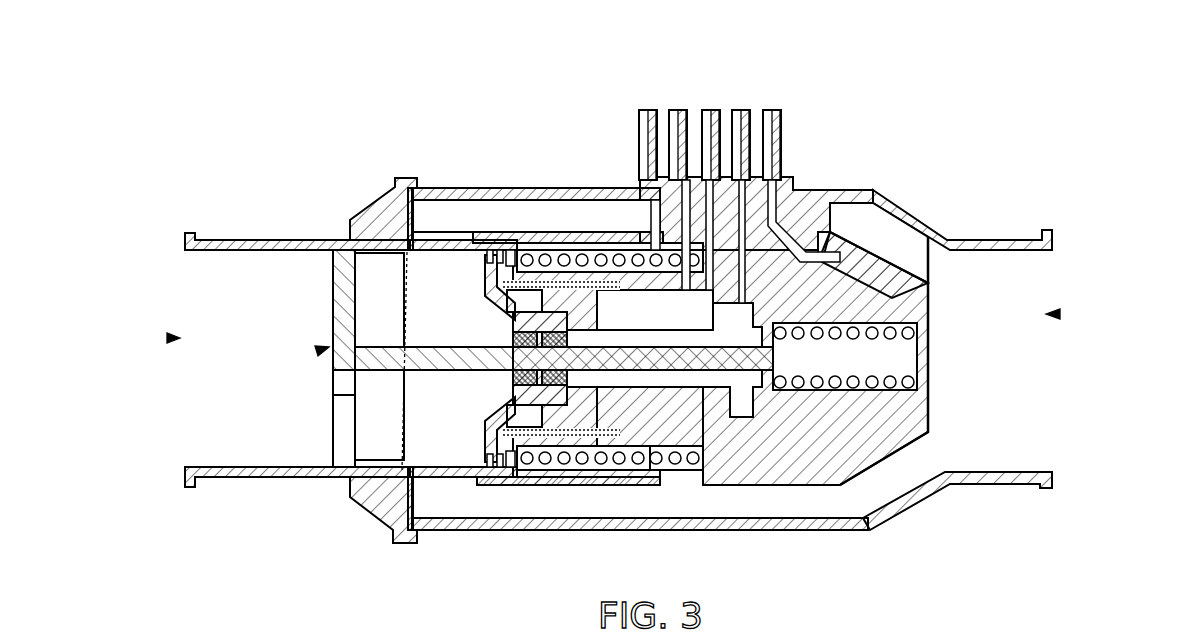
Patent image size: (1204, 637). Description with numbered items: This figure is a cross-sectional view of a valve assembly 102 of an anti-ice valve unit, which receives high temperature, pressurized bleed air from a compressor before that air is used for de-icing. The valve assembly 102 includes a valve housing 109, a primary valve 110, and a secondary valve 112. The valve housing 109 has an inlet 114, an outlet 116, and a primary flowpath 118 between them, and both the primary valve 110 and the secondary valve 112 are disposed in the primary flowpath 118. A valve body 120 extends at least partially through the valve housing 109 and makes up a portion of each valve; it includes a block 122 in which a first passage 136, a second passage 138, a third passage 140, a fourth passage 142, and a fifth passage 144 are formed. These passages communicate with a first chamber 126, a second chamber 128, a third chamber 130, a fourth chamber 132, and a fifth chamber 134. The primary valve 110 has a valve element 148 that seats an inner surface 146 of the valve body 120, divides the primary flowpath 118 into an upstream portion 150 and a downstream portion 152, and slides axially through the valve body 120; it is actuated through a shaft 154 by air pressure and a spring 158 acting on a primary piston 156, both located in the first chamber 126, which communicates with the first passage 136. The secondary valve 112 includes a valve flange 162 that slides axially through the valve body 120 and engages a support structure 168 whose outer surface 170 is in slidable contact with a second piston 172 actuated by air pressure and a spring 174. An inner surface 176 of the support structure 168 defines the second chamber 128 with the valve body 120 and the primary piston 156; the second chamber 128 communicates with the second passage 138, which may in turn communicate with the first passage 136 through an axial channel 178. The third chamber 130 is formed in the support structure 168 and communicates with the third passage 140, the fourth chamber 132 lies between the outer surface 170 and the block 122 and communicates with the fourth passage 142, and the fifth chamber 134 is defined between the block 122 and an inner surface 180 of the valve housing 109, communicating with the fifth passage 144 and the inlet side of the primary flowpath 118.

The valve assembly 102 is at (615, 308).
The valve housing 109 is at (365, 203).
The primary valve 110 is at (320, 351).
The secondary valve 112 is at (448, 244).
The inlet 114 is at (1062, 314).
The outlet 116 is at (170, 338).
The primary flowpath 118 is at (893, 483).
The valve body 120 is at (480, 189).
The block 122 is at (811, 205).
The first chamber 126 is at (838, 395).
The second chamber 128 is at (741, 321).
The third chamber 130 is at (647, 321).
The fourth chamber 132 is at (619, 243).
The fifth chamber 134 is at (561, 206).
The first passage 136 is at (774, 137).
The second passage 138 is at (741, 118).
The third passage 140 is at (717, 117).
The fourth passage 142 is at (677, 127).
The fifth passage 144 is at (648, 147).
The inner surface 146 is at (300, 252).
The valve element 148 is at (335, 322).
The upstream portion 150 is at (977, 267).
The downstream portion 152 is at (262, 438).
The shaft 154 is at (438, 371).
The primary piston 156 is at (764, 363).
The spring 158 is at (908, 392).
The valve flange 162 is at (413, 470).
The support structure 168 is at (681, 424).
The outer surface 170 is at (668, 452).
The second piston 172 is at (572, 455).
The spring 174 is at (548, 468).
The inner surface 176 is at (582, 364).
The axial channel 178 is at (827, 248).
The inner surface 180 is at (513, 215).